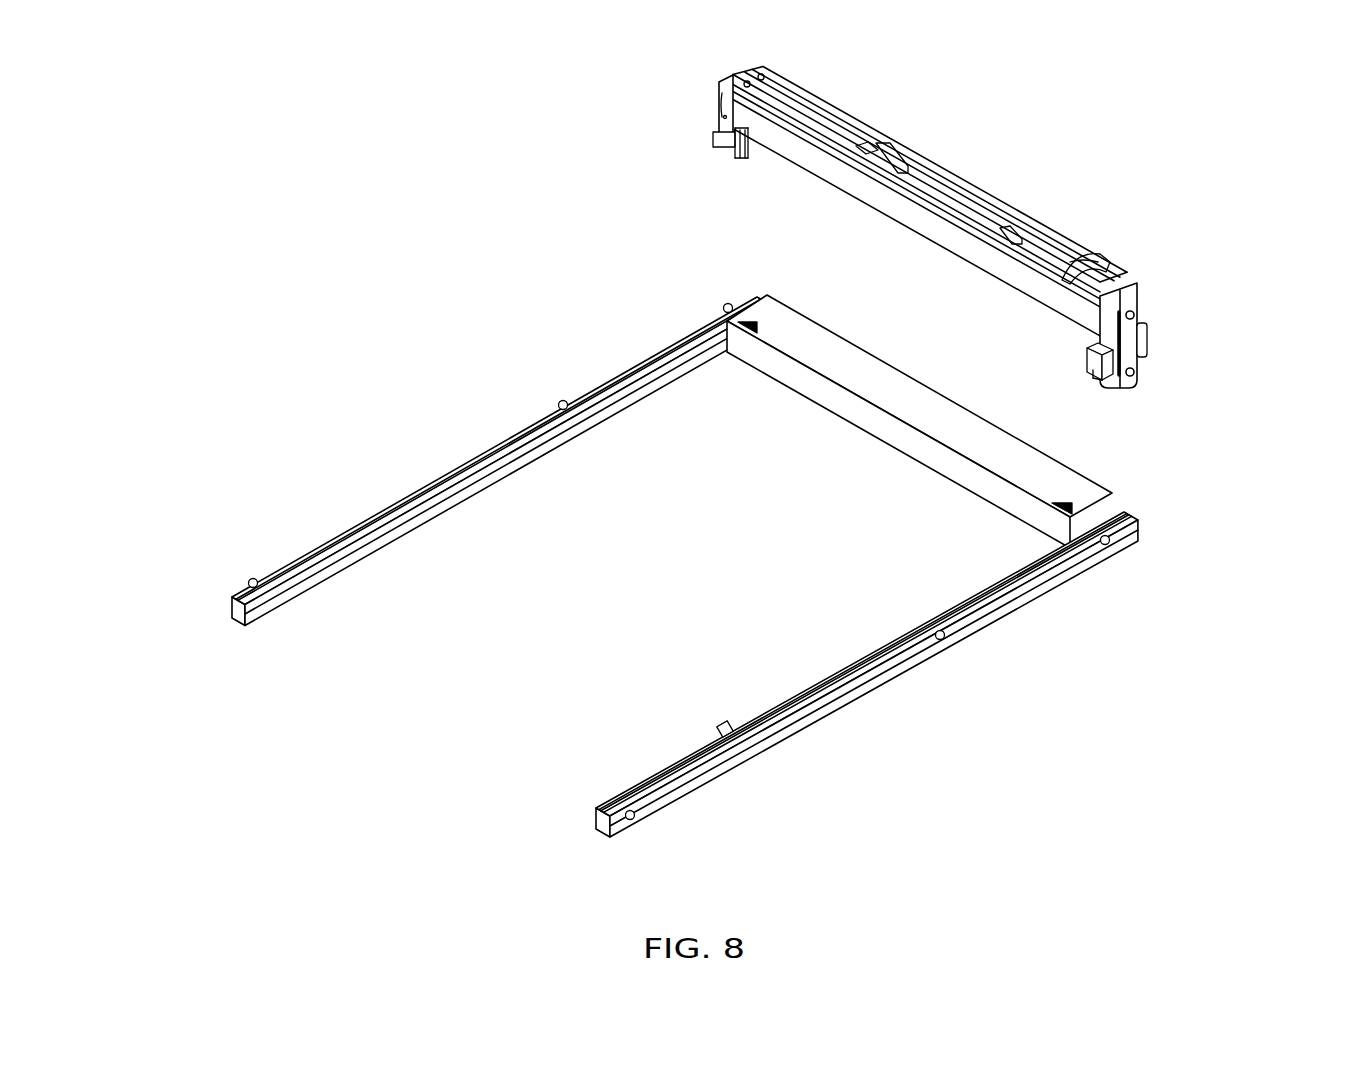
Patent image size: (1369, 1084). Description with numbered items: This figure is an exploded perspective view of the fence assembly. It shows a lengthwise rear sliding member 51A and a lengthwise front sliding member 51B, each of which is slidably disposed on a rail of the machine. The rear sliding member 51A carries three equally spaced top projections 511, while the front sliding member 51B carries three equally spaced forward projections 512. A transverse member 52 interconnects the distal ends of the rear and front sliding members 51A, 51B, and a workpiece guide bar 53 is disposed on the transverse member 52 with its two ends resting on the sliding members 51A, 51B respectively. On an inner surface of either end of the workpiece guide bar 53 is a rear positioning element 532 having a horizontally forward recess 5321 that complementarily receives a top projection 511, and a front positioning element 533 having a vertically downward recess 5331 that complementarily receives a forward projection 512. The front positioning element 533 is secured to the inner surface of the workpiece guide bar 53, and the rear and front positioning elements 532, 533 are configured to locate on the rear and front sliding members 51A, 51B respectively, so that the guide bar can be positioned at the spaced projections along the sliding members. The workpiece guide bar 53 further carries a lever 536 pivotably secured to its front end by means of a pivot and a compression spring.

The rear sliding member 51A is at (433, 480).
The front sliding member 51B is at (870, 685).
The top projections 511 is at (563, 401).
The forward projections 512 is at (630, 811).
The transverse member 52 is at (838, 399).
The workpiece guide bar 53 is at (965, 240).
The rear positioning element 532 is at (713, 137).
The horizontally forward recess 5321 is at (720, 118).
The front positioning element 533 is at (1093, 362).
The vertically downward recess 5331 is at (1098, 375).
The lever 536 is at (1150, 350).